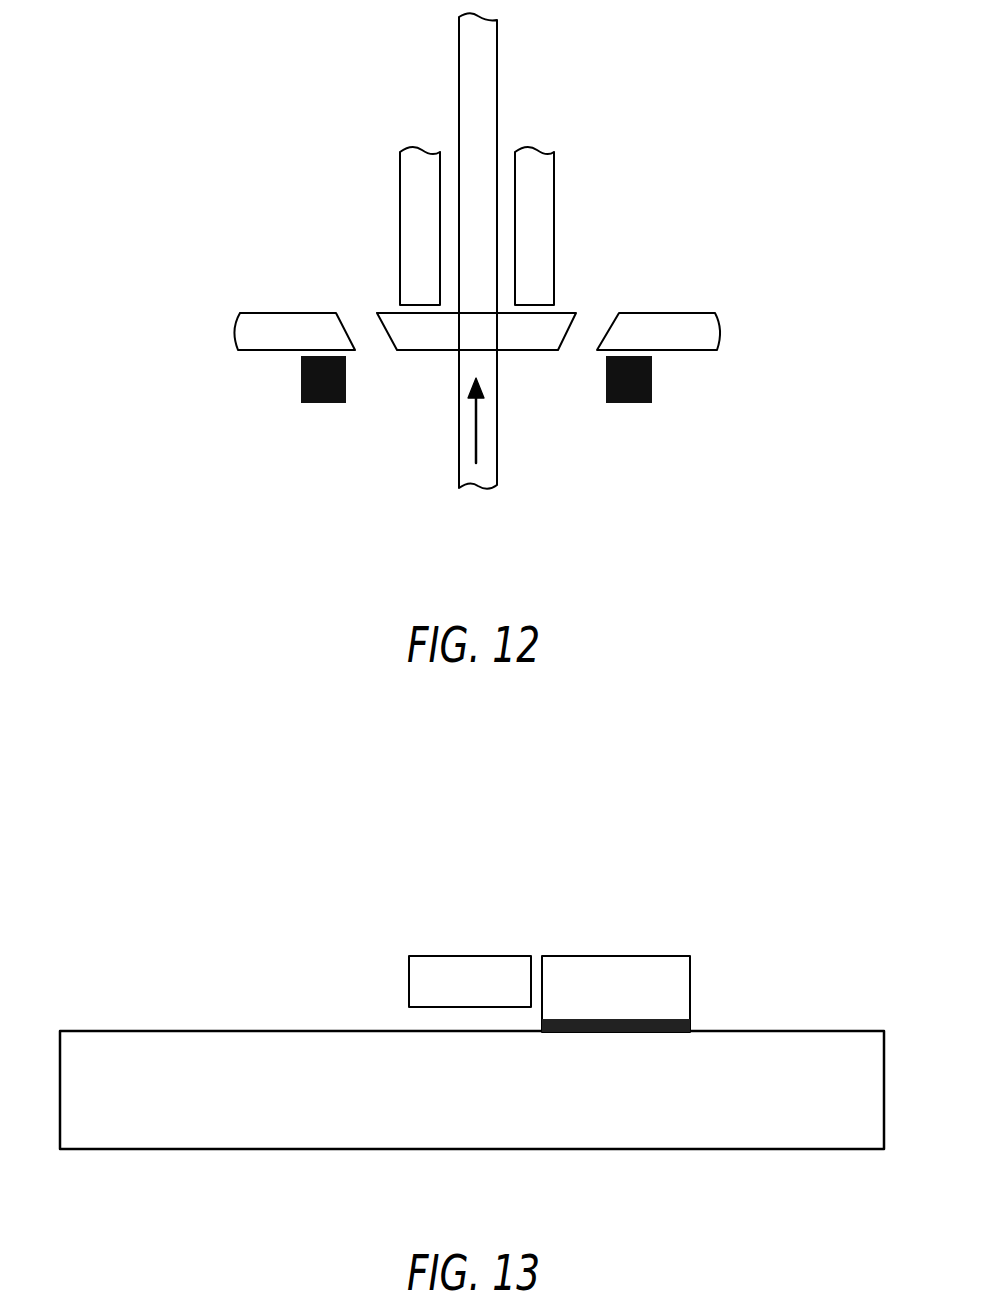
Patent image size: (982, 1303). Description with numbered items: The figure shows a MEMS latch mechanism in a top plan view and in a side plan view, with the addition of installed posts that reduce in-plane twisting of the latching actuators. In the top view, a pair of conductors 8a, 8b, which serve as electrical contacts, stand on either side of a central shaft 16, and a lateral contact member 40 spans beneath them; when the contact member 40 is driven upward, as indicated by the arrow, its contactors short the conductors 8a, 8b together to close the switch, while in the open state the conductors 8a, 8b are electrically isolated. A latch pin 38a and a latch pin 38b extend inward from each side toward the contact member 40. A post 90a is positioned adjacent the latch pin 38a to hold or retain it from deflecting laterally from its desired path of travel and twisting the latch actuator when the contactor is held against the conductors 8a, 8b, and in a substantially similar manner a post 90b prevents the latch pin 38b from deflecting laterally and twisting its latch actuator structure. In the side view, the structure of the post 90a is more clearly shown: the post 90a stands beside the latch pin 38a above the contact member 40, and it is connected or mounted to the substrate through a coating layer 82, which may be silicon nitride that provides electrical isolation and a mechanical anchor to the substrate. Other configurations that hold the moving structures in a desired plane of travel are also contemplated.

In FIG. 12, the shaft 16 is at (487, 48).
In FIG. 12, the conductor 8a is at (543, 172).
In FIG. 12, the conductor 8b is at (412, 172).
In FIG. 12, the lateral contact member 40 is at (527, 341).
In FIG. 13, the lateral contact member 40 is at (831, 1031).
In FIG. 12, the latch pin 38a is at (684, 313).
In FIG. 13, the latch pin 38a is at (432, 956).
In FIG. 12, the latch pin 38b is at (268, 313).
In FIG. 12, the post 90a is at (652, 385).
In FIG. 13, the post 90a is at (665, 956).
In FIG. 12, the post 90b is at (301, 385).
In FIG. 13, the coating layer 82 is at (692, 1028).